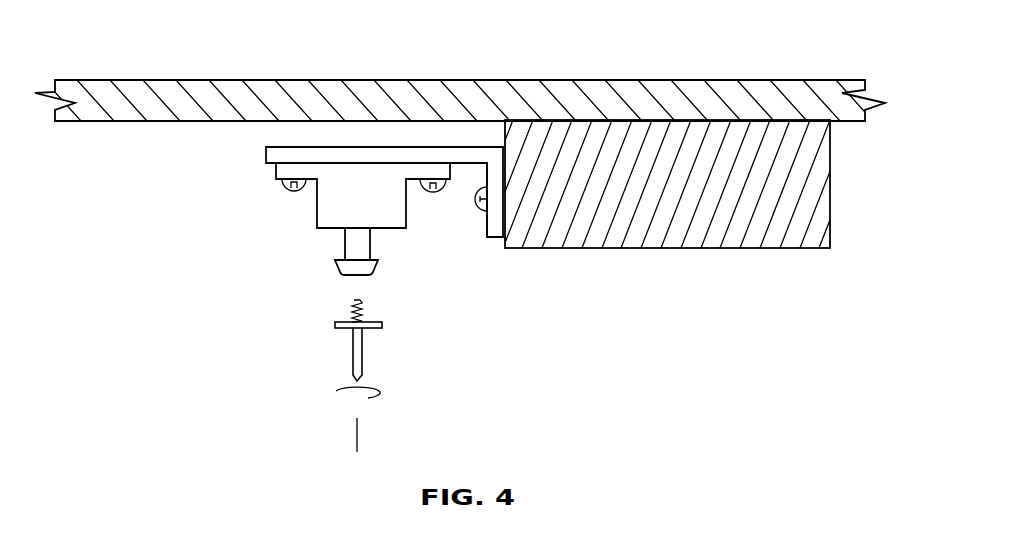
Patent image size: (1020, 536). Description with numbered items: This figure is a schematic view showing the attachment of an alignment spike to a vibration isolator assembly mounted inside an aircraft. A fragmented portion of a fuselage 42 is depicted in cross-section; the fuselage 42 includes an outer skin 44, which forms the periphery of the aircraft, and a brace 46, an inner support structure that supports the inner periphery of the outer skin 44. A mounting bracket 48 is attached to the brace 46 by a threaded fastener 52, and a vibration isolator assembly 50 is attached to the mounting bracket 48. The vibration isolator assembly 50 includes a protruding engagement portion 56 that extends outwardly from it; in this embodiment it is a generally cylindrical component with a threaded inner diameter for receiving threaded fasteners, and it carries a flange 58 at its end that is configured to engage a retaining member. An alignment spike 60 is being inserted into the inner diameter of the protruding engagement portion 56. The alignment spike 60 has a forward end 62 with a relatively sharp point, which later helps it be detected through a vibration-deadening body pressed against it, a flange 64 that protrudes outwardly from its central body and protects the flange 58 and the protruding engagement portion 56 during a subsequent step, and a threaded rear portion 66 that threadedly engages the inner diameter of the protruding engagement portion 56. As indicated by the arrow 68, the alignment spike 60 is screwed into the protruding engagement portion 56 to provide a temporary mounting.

The fuselage 42 is at (458, 132).
The outer skin 44 is at (651, 80).
The brace 46 is at (831, 182).
The mounting bracket 48 is at (500, 242).
The vibration isolator assembly 50 is at (342, 222).
The threaded fastener 52 is at (475, 212).
The protruding engagement portion 56 is at (343, 240).
The flange 58 is at (378, 268).
The alignment spike 60 is at (337, 361).
The forward end 62 is at (362, 350).
The flange 64 is at (335, 325).
The rear portion 66 is at (354, 300).
The arrow 68 is at (385, 396).